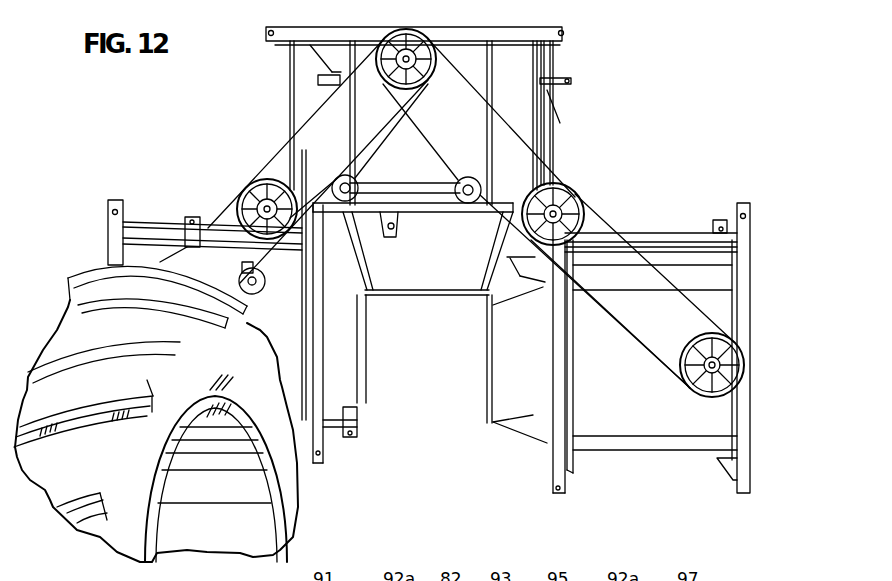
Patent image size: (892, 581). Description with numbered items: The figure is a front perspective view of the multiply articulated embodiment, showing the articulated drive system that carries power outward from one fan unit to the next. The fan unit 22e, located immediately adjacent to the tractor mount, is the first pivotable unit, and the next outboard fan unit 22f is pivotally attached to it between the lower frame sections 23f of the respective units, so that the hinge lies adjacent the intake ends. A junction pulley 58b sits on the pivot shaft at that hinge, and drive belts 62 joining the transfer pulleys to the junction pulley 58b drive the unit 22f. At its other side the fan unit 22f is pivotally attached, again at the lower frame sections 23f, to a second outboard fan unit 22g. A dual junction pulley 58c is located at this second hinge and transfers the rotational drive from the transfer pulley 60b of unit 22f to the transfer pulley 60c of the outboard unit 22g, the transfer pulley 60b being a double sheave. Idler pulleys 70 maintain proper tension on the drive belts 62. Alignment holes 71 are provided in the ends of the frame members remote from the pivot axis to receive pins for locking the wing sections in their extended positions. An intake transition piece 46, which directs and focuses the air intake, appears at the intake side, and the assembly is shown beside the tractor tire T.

The alignment holes 71 is at (270, 31).
The transfer pulley 60b is at (405, 28).
The fan unit 22f is at (583, 62).
The fan unit 22e is at (142, 200).
The idler pulleys 70 is at (457, 180).
The junction pulley 58b is at (247, 185).
The dual junction pulley 58c is at (580, 197).
The drive belt 62 is at (612, 216).
The lower frame sections 23f is at (443, 208).
The transfer pulley 60c is at (745, 361).
The intake transition piece 46 is at (510, 423).
The tire T is at (317, 482).
The second outboard fan unit 22g is at (628, 460).